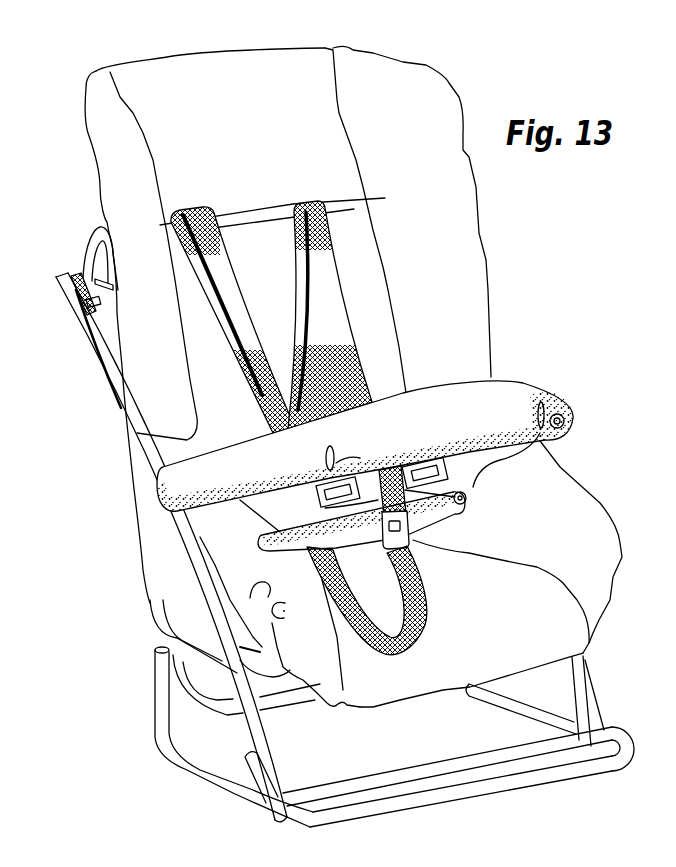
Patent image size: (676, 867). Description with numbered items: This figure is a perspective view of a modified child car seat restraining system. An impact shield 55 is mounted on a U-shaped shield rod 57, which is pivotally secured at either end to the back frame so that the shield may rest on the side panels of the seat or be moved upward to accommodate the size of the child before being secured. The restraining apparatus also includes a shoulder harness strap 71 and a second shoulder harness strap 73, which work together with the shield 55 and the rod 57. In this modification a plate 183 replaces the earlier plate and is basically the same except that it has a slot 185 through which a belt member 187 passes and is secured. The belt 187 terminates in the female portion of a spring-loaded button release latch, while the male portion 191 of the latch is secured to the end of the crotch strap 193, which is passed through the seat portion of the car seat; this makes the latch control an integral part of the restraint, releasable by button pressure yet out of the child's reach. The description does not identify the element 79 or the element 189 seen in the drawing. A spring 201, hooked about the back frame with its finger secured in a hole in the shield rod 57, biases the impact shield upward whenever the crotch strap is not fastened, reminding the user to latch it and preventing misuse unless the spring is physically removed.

The impact shield 55 is at (428, 400).
The U-shaped shield rod 57 is at (73, 318).
The shoulder harness strap 71 is at (327, 300).
The shoulder harness strap 73 is at (232, 301).
The tether cord 79 is at (474, 469).
The plate 183 is at (403, 460).
The slot 185 is at (372, 457).
The belt member 187 is at (322, 507).
The buckle 189 is at (412, 542).
The male portion of the latch 191 is at (393, 556).
The crotch strap 193 is at (418, 643).
The spring 201 is at (76, 272).